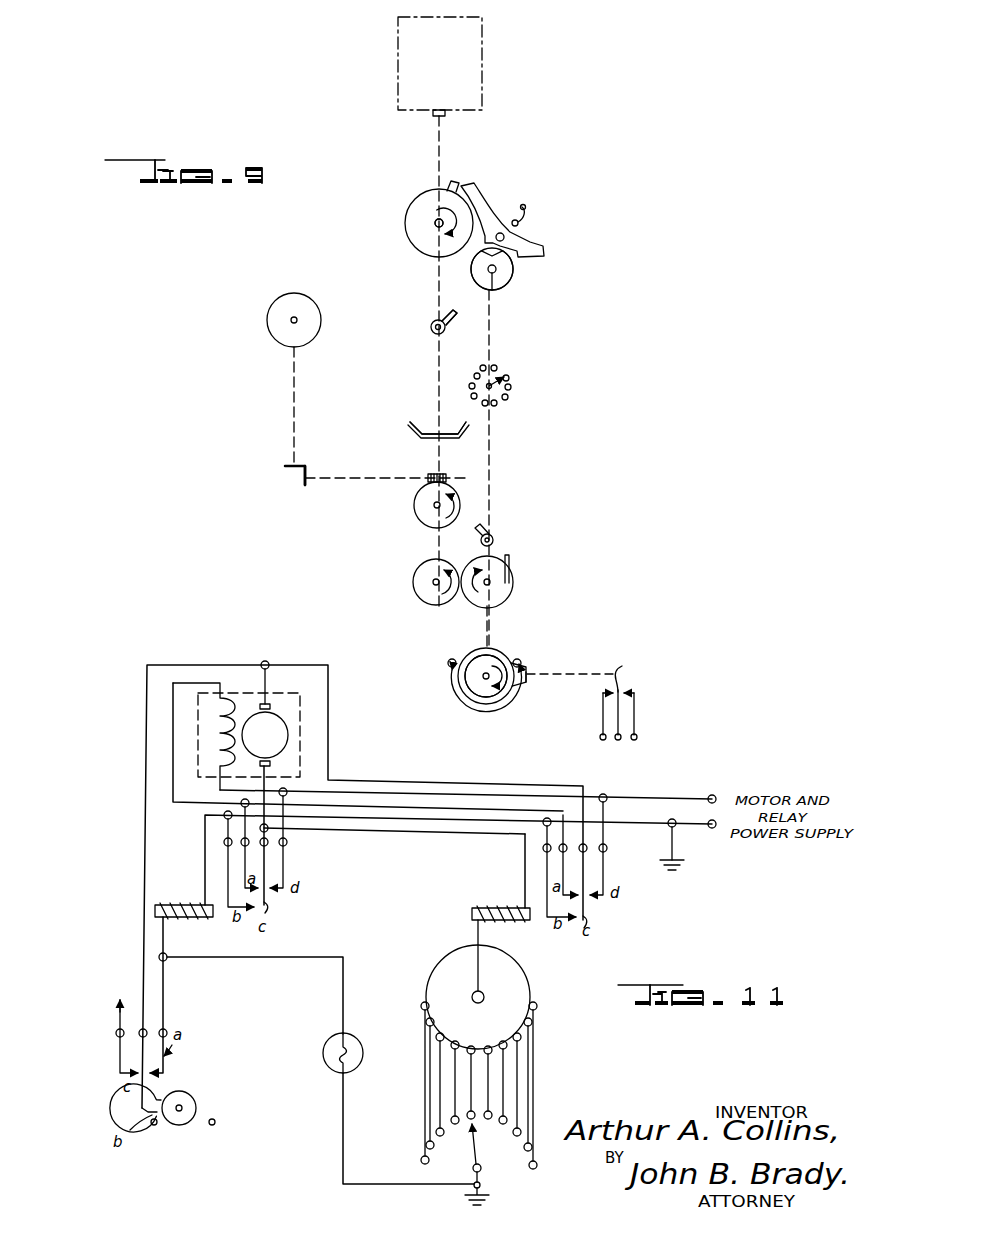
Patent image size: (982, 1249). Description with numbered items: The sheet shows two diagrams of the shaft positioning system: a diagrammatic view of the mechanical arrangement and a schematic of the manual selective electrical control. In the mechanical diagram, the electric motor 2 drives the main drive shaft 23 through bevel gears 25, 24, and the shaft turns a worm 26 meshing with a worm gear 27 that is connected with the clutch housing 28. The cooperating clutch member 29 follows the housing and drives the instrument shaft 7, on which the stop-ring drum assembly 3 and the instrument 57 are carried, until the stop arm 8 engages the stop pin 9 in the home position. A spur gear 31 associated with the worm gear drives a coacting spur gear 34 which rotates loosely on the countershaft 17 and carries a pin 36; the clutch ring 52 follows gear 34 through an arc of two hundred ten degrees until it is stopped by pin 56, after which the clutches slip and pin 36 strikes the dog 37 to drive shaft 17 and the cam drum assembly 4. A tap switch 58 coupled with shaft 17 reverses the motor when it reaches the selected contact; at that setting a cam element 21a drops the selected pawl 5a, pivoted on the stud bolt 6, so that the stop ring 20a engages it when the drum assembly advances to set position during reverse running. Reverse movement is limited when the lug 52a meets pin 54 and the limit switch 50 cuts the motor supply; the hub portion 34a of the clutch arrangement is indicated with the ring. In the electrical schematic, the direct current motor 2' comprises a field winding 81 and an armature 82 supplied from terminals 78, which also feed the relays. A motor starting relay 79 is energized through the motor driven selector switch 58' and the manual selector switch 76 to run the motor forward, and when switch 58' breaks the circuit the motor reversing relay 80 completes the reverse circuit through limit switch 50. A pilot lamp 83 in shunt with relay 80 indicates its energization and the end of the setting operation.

In FIG. 9, the instrument 57 is at (410, 58).
In FIG. 9, the stop-ring drum assembly 3 is at (430, 190).
In FIG. 9, the instrument shaft 7 is at (435, 225).
In FIG. 9, the stop ring 20a is at (455, 184).
In FIG. 9, the pawl 5a is at (490, 212).
In FIG. 9, the stud bolt 6 is at (506, 236).
In FIG. 9, the countershaft 17 is at (496, 268).
In FIG. 9, the cam element 21a is at (508, 284).
In FIG. 9, the cam drum assembly 4 is at (498, 290).
In FIG. 9, the stop arm 8 is at (442, 312).
In FIG. 9, the stop pin 9 is at (428, 323).
In FIG. 9, the tap switch 58 is at (524, 386).
In FIG. 9, the clutch housing 28 is at (414, 428).
In FIG. 9, the clutch member 29 is at (424, 422).
In FIG. 9, the main drive shaft 23 is at (340, 482).
In FIG. 9, the electric motor 2 is at (271, 370).
In FIG. 9, the bevel gear 25 is at (288, 470).
In FIG. 9, the bevel gear 24 is at (300, 480).
In FIG. 9, the worm 26 is at (428, 476).
In FIG. 9, the worm gear 27 is at (418, 512).
In FIG. 9, the dog 37 is at (493, 537).
In FIG. 9, the pin 36 is at (511, 562).
In FIG. 9, the spur gear 31 is at (414, 584).
In FIG. 9, the spur gear 34 is at (512, 592).
In FIG. 9, the clutch ring 52 is at (498, 660).
In FIG. 11, the clutch ring 52 is at (178, 1132).
In FIG. 9, the pin 54 is at (522, 662).
In FIG. 9, the pin 56 is at (449, 661).
In FIG. 9, the cam hub 34a is at (470, 682).
In FIG. 9, the lug 52a is at (528, 678).
In FIG. 9, the limit switch 50 is at (624, 672).
In FIG. 11, the limit switch 50 is at (114, 1062).
In FIG. 11, the armature 82 is at (284, 734).
In FIG. 11, the direct current motor 2' is at (281, 735).
In FIG. 11, the field winding 81 is at (212, 735).
In FIG. 11, the terminals 78 is at (700, 812).
In FIG. 11, the motor reversing relay 80 is at (194, 918).
In FIG. 11, the motor starting relay 79 is at (505, 905).
In FIG. 11, the pilot lamp 83 is at (332, 1082).
In FIG. 11, the motor driven selector switch 58' is at (498, 984).
In FIG. 11, the manual selector switch 76 is at (500, 1133).